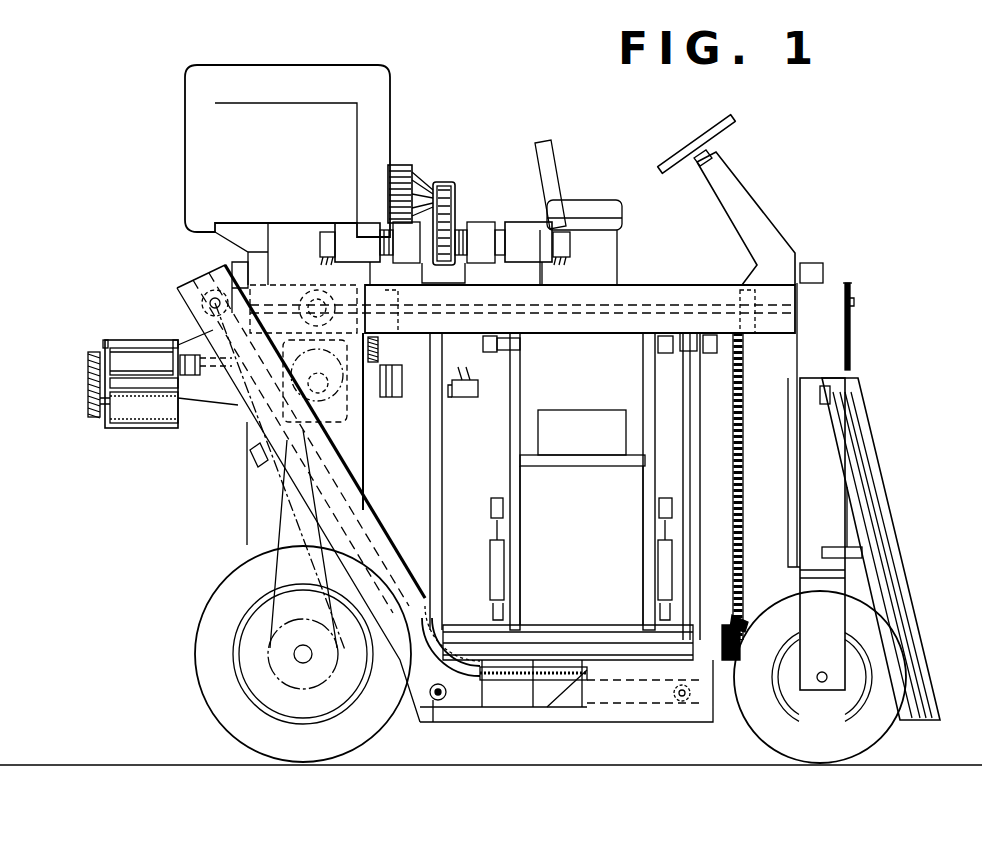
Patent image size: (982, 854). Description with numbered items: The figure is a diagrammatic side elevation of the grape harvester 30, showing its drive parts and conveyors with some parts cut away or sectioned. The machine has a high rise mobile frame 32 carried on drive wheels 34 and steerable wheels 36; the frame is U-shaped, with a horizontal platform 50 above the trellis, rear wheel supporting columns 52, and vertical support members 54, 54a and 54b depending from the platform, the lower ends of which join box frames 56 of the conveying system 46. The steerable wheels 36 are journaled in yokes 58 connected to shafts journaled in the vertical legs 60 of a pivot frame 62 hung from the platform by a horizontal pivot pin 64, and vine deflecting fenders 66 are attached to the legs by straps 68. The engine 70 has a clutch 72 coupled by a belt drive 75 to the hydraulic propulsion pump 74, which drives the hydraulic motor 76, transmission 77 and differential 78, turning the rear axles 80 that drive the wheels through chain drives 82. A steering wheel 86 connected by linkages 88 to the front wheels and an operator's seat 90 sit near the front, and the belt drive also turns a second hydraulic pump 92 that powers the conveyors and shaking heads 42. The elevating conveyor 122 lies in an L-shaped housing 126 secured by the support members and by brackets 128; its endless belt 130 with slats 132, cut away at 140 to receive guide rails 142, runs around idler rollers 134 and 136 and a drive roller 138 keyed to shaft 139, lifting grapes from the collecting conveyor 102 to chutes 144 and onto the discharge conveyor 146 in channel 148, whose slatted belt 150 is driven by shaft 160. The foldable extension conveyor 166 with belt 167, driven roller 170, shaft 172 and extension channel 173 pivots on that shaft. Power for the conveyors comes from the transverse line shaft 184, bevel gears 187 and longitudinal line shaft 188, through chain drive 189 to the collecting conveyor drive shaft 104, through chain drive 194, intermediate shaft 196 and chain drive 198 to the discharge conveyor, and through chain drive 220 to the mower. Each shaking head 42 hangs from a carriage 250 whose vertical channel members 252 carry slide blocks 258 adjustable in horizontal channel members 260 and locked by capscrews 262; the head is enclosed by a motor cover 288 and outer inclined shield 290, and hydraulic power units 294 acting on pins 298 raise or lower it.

The grape harvester 30 is at (103, 97).
The mobile frame 32 is at (632, 287).
The drive wheels 34 is at (210, 612).
The steerable wheels 36 is at (877, 740).
The shaking heads 42 is at (525, 455).
The conveying system 46 is at (278, 473).
The horizontal platform 50 is at (570, 287).
The rear wheel supporting columns 52 is at (252, 493).
The vertical support member 54 is at (428, 438).
The vertical support member 54a is at (697, 447).
The vertical support member 54b is at (722, 363).
The box frames 56 is at (445, 625).
The yokes 58 is at (836, 614).
The vertical legs 60 is at (830, 323).
The pivot frame 62 is at (847, 290).
The horizontal pivot pin 64 is at (852, 302).
The vine deflecting fenders 66 is at (882, 463).
The straps 68 is at (830, 402).
The engine 70 is at (282, 151).
The clutch 72 is at (402, 163).
The hydraulic propulsion pump 74 is at (372, 254).
The belt drive 75 is at (457, 188).
The hydraulic motor 76 is at (508, 418).
The transmission 77 is at (387, 398).
The differential 78 is at (348, 422).
The rear axles 80 is at (317, 375).
The chain drives 82 is at (280, 476).
The steering wheel 86 is at (668, 162).
The linkages 88 is at (815, 278).
The operator's seat 90 is at (587, 200).
The second hydraulic pump 92 is at (543, 253).
The collecting conveyor 102 is at (563, 650).
The drive shaft 104 is at (742, 628).
The elevating conveyor 122 is at (653, 723).
The L-shaped housing 126 is at (347, 482).
The brackets 128 is at (250, 452).
The endless belt 130 is at (360, 505).
The slats 132 is at (538, 682).
The idler roller 134 is at (430, 690).
The idler roller 136 is at (672, 693).
The drive roller 138 is at (240, 306).
The shaft 139 is at (215, 297).
The cut-away portion 140 is at (482, 707).
The guide rails 142 is at (588, 668).
The chutes 144 is at (177, 293).
The discharge conveyor 146 is at (100, 340).
The conveyor channel 148 is at (118, 338).
The endless slatted belt 150 is at (148, 353).
The drive shaft 160 is at (100, 362).
The foldable extension conveyor 166 is at (103, 425).
The endless slatted belt 167 is at (130, 420).
The driven roller 170 is at (142, 413).
The drive shaft 172 is at (102, 403).
The extension channel 173 is at (108, 428).
The transverse line shaft 184 is at (317, 282).
The bevel gears 187 is at (307, 327).
The longitudinal line shaft 188 is at (647, 303).
The chain drive 189 is at (743, 400).
The chain drive 194 is at (378, 345).
The intermediate shaft 196 is at (378, 358).
The chain drive 198 is at (195, 378).
The chain drive 220 is at (730, 663).
The carriage 250 is at (510, 445).
The vertical channel members 252 is at (648, 493).
The slide block 258 is at (657, 343).
The horizontal channel members 260 is at (657, 362).
The capscrews 262 is at (487, 345).
The motor cover 288 is at (588, 448).
The outer inclined shield 290 is at (603, 570).
The hydraulic power units 294 is at (657, 585).
The pins 298 is at (490, 505).